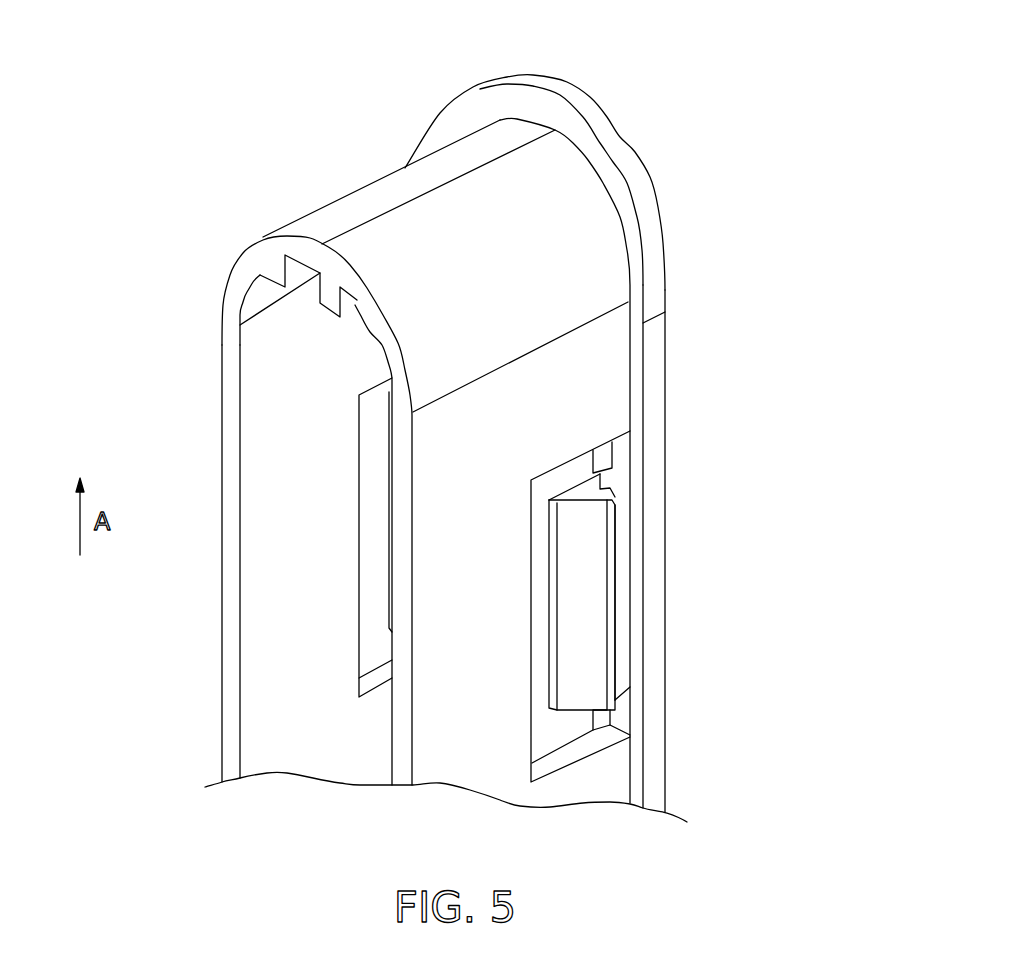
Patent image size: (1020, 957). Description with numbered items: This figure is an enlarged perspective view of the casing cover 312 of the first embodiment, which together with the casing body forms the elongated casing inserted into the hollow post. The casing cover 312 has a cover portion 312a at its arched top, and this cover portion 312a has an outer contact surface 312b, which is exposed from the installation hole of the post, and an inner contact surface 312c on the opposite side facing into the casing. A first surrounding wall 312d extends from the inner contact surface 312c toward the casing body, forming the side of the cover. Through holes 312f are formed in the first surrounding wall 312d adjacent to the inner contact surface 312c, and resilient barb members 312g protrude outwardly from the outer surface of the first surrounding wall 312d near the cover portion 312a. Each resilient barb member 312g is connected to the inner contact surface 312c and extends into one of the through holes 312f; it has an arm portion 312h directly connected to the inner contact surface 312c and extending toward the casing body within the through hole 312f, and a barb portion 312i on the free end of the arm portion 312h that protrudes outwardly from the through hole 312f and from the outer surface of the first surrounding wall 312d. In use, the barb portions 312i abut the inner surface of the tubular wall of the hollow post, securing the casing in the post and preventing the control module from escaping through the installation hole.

The casing cover 312 is at (498, 412).
The cover portion 312a is at (566, 93).
The outer contact surface 312b is at (650, 183).
The inner contact surface 312c is at (532, 108).
The first surrounding wall 312d is at (572, 372).
The through hole 312f is at (562, 730).
The resilient barb member 312g is at (613, 478).
The arm portion 312h is at (623, 568).
The barb portion 312i is at (608, 516).